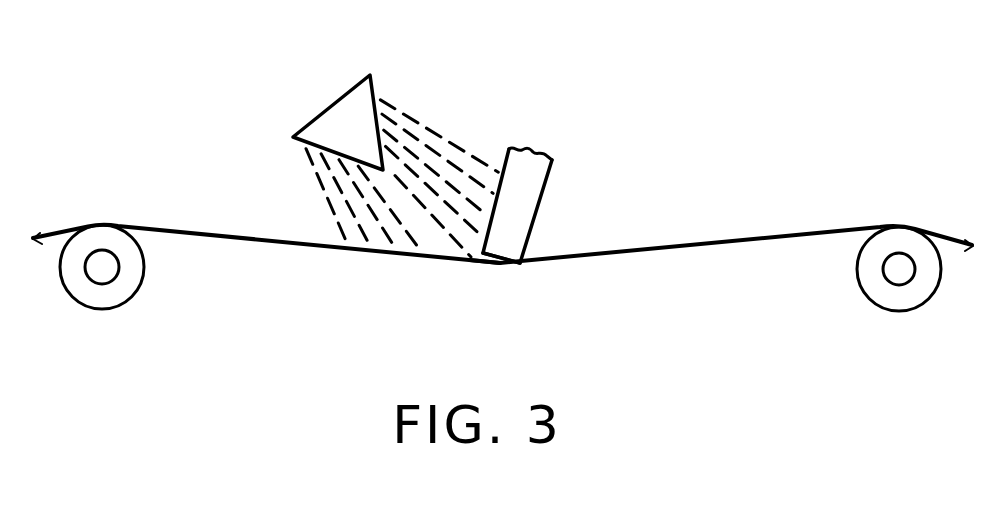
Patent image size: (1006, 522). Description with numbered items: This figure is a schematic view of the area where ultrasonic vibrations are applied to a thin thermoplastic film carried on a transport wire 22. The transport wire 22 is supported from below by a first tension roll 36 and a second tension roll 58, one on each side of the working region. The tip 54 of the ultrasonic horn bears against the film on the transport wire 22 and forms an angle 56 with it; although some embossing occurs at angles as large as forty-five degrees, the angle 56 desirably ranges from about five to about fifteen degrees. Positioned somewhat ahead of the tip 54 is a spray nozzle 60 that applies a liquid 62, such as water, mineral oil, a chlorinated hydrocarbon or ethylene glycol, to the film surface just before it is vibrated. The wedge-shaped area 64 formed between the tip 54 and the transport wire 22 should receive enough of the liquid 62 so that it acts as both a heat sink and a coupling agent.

The transport wire 22 is at (152, 225).
The first tension roll 36 is at (138, 285).
The tip 54 is at (537, 188).
The angle 56 is at (482, 262).
The second tension roll 58 is at (938, 269).
The spray nozzle 60 is at (373, 83).
The liquid 62 is at (447, 137).
The wedge-shaped area 64 is at (492, 265).